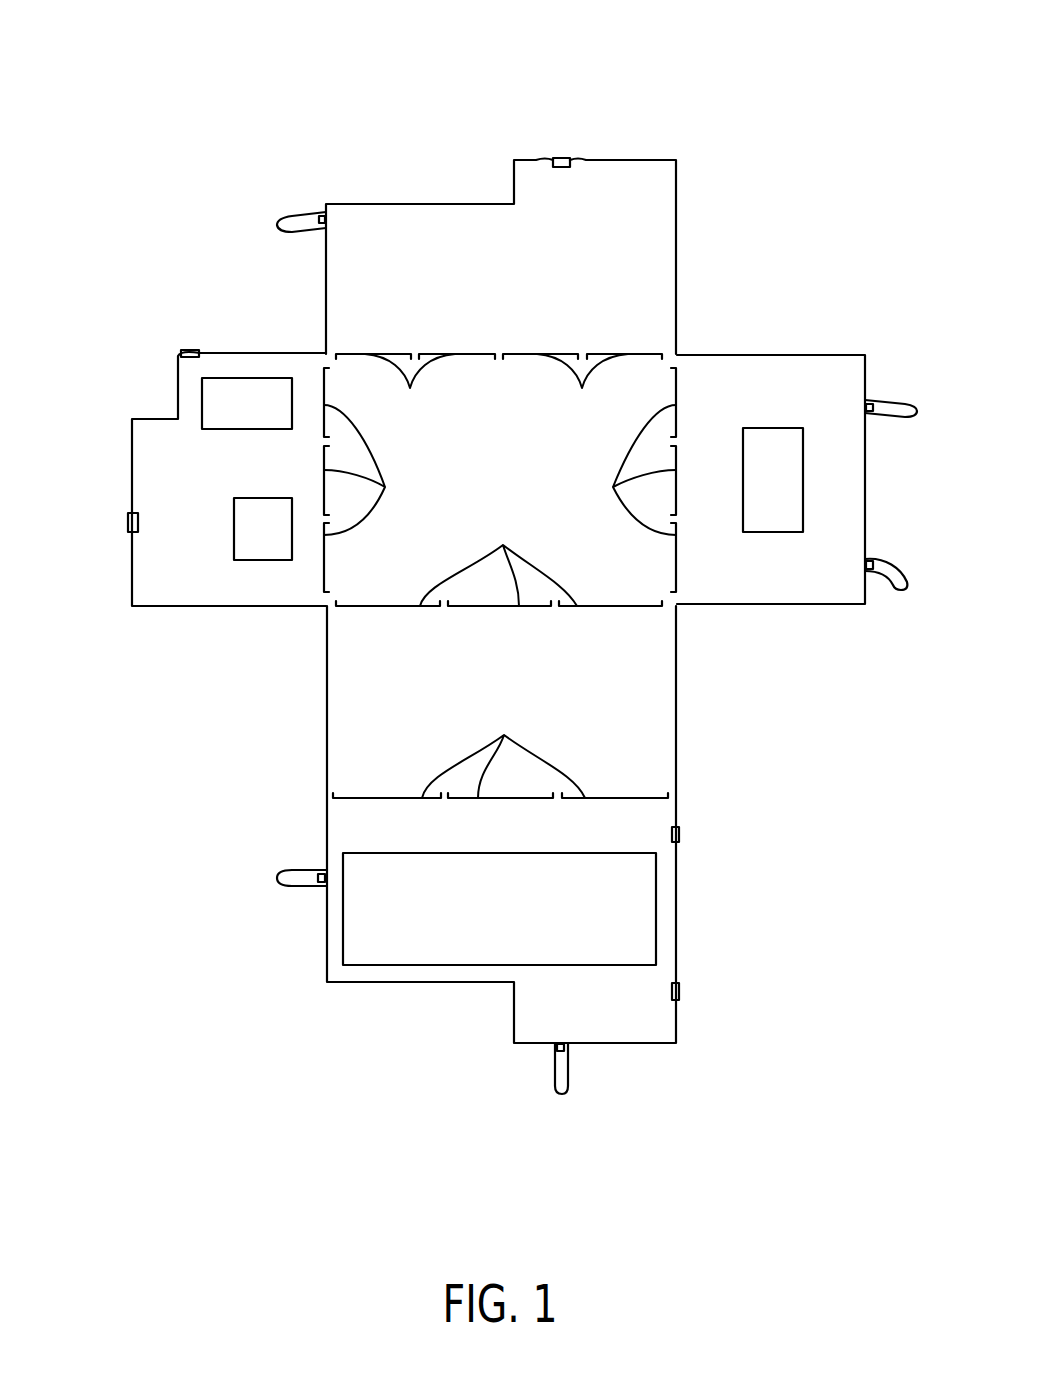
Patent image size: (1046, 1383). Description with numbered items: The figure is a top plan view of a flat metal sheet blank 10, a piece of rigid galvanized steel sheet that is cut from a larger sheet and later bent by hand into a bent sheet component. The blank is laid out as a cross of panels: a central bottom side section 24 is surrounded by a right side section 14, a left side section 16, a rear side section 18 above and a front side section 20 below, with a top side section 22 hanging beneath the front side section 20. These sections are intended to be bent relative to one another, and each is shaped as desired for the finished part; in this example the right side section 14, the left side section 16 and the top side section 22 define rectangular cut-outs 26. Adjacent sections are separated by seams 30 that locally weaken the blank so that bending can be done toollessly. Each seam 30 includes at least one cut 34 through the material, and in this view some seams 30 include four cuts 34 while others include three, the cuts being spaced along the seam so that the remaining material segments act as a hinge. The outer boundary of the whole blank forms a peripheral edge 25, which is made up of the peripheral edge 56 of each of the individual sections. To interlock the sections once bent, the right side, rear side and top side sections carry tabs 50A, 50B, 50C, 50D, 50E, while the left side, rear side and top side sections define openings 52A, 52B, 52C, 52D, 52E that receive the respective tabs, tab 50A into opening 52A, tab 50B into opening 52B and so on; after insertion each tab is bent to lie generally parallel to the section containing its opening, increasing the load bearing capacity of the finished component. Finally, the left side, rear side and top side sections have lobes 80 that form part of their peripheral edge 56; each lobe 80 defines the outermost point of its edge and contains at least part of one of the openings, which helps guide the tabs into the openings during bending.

The metal sheet blank 10 is at (251, 80).
The right side section 14 is at (771, 479).
The left side section 16 is at (229, 479).
The rear side section 18 is at (501, 257).
The front side section 20 is at (501, 702).
The top side section 22 is at (501, 920).
The bottom side section 24 is at (500, 480).
The peripheral edge 25 is at (742, 354).
The cut-outs 26 is at (248, 378).
The seams 30 is at (394, 338).
The cut 34 is at (500, 576).
The tab 50A is at (899, 578).
The tab 50B is at (906, 403).
The tab 50C is at (555, 1083).
The tab 50D is at (286, 887).
The tab 50E is at (289, 213).
The opening 52A is at (682, 830).
The opening 52B is at (682, 986).
The opening 52C is at (556, 157).
The opening 52D is at (127, 531).
The opening 52E is at (197, 350).
The peripheral edge 56 is at (676, 250).
The lobes 80 is at (570, 157).